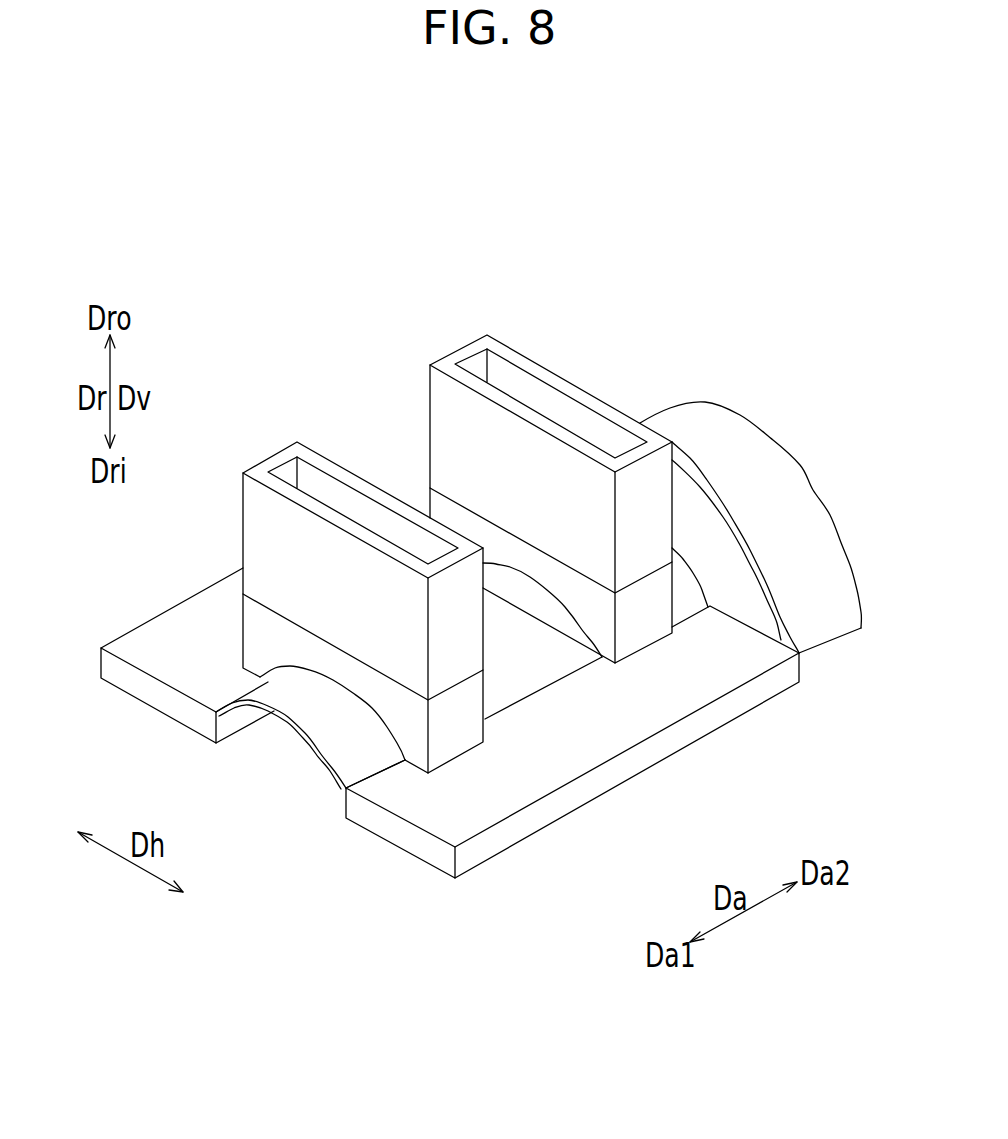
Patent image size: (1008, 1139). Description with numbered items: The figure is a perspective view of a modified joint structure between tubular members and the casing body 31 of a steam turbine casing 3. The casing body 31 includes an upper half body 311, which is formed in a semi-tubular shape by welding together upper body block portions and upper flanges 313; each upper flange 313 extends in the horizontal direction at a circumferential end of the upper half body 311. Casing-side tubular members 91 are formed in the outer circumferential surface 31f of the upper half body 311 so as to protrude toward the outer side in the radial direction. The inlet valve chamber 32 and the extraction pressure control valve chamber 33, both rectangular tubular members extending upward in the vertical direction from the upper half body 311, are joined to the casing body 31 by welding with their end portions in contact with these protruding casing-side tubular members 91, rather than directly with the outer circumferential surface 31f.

The casing 3 is at (690, 303).
The casing body 31 is at (429, 695).
The upper half body 311 is at (283, 652).
The upper flange 313 is at (160, 648).
The outer circumferential surface 31f is at (365, 763).
The inlet valve chamber 32 is at (322, 452).
The extraction pressure control valve chamber 33 is at (513, 350).
The casing-side tubular member 91 is at (653, 610).